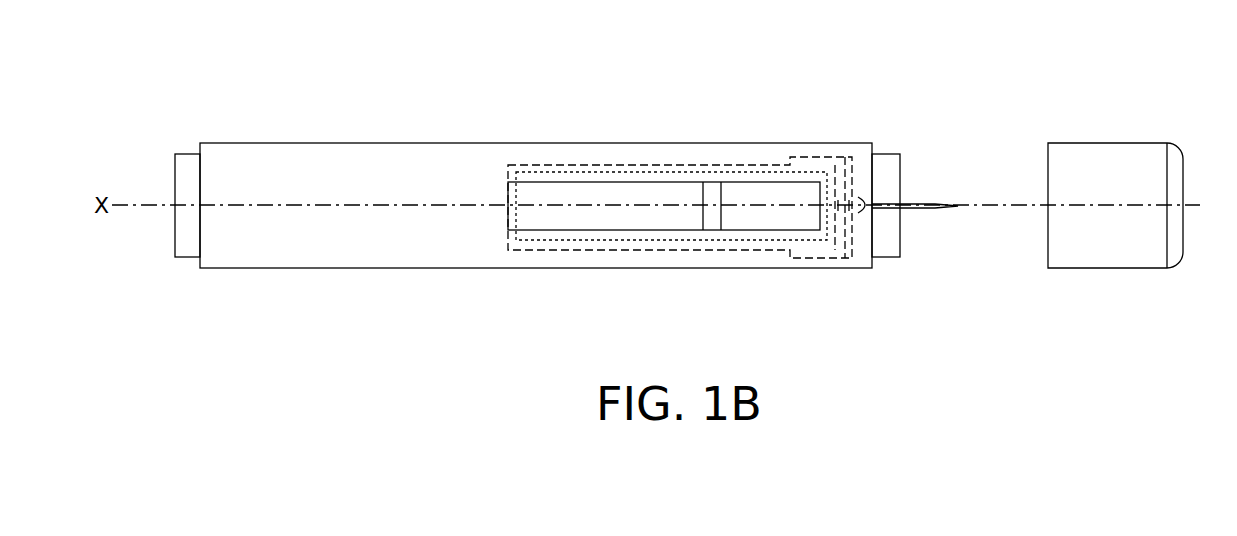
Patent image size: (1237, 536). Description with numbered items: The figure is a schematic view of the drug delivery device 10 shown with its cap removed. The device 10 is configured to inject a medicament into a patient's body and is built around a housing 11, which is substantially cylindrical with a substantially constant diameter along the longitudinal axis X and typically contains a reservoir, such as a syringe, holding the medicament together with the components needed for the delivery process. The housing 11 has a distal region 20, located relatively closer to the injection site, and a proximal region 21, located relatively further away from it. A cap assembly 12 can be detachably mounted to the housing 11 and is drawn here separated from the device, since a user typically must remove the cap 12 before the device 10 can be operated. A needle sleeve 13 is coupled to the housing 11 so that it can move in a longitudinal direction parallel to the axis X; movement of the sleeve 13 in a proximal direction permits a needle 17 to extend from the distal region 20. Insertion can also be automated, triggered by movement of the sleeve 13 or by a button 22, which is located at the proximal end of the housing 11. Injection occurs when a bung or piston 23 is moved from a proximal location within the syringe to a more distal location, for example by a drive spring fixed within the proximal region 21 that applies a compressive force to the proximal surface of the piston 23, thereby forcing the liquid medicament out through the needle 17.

The drug delivery device 10 is at (873, 57).
The housing 11 is at (723, 153).
The cap assembly 12 is at (1108, 157).
The needle sleeve 13 is at (885, 160).
The needle 17 is at (923, 200).
The distal region 20 is at (860, 257).
The proximal region 21 is at (247, 253).
The button 22 is at (193, 245).
The piston 23 is at (712, 222).